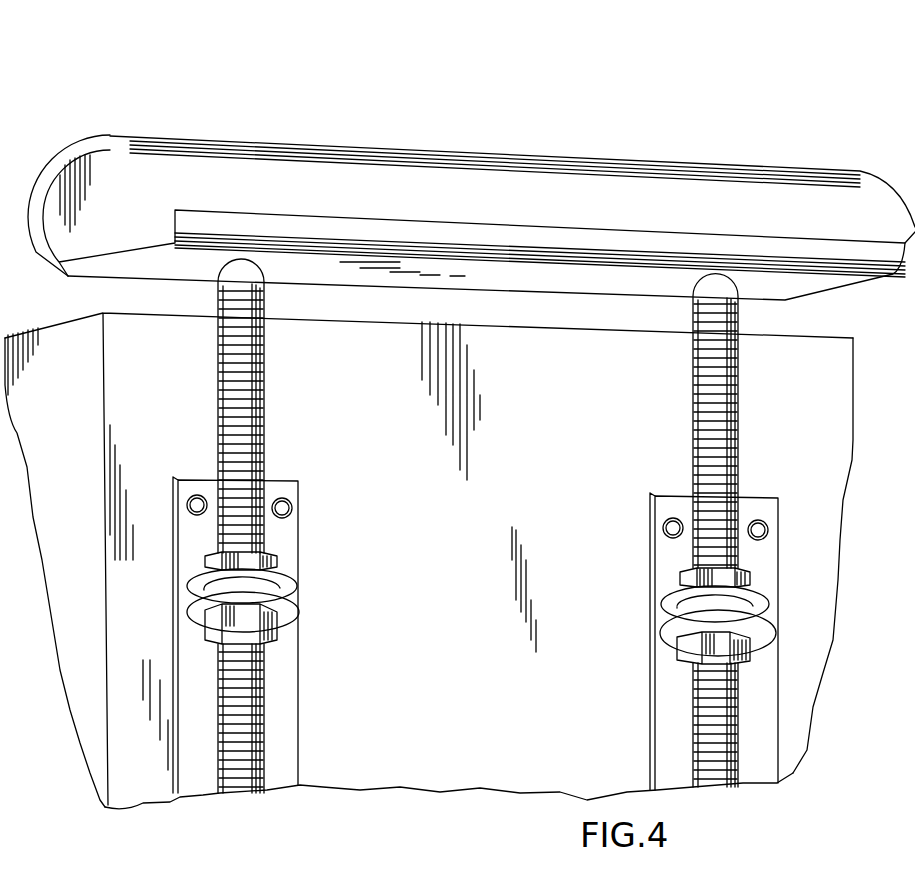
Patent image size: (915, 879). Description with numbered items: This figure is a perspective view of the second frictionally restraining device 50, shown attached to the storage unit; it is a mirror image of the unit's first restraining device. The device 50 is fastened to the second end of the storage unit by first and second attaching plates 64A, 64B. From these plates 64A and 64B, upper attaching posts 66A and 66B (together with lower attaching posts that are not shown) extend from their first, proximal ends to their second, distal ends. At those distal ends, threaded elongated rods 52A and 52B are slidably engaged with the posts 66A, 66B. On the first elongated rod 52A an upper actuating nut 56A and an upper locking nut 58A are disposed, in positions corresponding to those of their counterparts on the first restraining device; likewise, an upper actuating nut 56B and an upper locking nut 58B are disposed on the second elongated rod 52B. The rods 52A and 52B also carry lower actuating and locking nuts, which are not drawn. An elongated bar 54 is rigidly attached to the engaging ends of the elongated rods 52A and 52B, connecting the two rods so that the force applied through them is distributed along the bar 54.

The second frictionally restraining device 50 is at (387, 113).
The threaded elongated rod 52A is at (263, 345).
The threaded elongated rod 52B is at (737, 378).
The elongated bar 54 is at (565, 190).
The upper actuating nut 56A is at (273, 560).
The upper actuating nut 56B is at (690, 580).
The upper locking nut 58A is at (277, 632).
The upper locking nut 58B is at (678, 653).
The first attaching plate 64A is at (283, 732).
The second attaching plate 64B is at (677, 747).
The upper attaching post 66A is at (275, 587).
The upper attaching post 66B is at (683, 607).